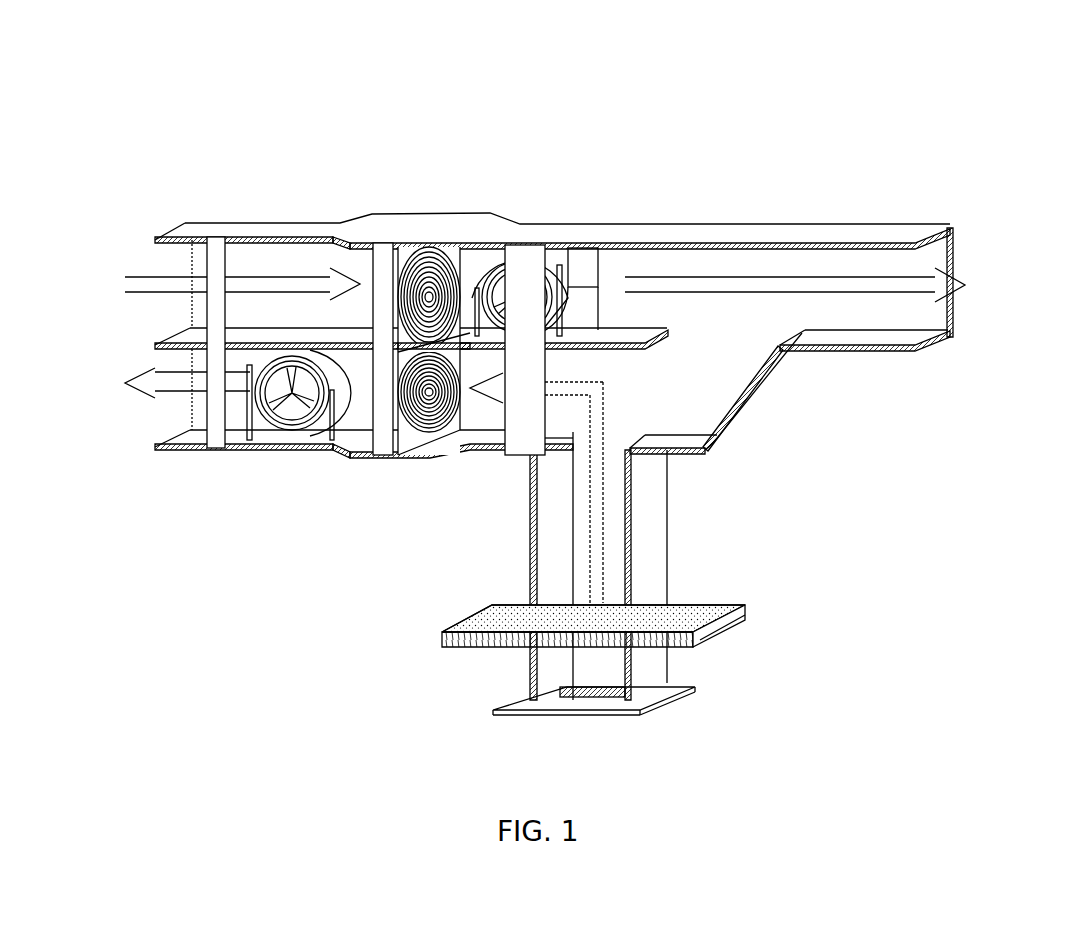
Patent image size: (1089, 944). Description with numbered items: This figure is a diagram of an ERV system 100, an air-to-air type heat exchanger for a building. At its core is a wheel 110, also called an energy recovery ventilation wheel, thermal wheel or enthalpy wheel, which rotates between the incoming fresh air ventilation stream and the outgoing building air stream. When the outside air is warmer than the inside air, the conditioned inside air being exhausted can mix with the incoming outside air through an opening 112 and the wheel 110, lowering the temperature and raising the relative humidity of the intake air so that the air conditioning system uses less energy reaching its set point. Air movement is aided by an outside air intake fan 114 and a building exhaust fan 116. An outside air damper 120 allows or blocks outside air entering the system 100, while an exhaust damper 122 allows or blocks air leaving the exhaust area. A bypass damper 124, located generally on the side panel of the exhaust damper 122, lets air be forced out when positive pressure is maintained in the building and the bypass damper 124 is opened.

The ERV system 100 is at (937, 113).
The wheel 110 is at (485, 205).
The opening 112 is at (717, 385).
The outside air intake fan 114 is at (582, 217).
The building exhaust fan 116 is at (275, 458).
The outside air damper 120 is at (190, 225).
The exhaust damper 122 is at (215, 478).
The bypass damper 124 is at (497, 475).